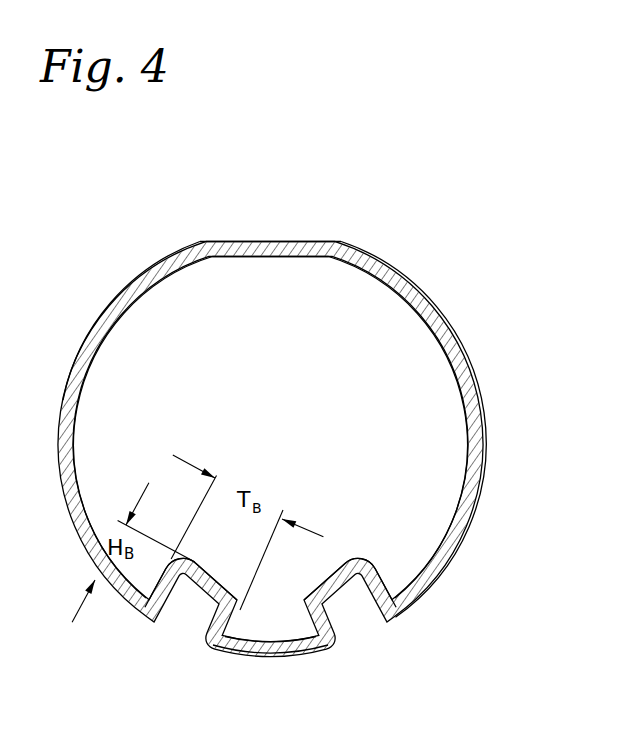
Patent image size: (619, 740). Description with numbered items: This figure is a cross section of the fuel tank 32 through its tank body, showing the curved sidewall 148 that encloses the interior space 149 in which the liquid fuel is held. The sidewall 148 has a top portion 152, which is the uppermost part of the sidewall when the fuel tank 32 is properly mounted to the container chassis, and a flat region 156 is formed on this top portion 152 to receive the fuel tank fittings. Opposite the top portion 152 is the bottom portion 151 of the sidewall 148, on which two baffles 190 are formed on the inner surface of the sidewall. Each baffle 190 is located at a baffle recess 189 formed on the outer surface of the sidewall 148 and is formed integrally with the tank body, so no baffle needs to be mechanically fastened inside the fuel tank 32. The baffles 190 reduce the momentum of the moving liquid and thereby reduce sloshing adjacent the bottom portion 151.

The fuel tank 32 is at (488, 614).
The curved sidewall 148 is at (432, 307).
The interior space 149 is at (347, 310).
The bottom portion 151 is at (276, 658).
The top portion 152 is at (196, 246).
The flat region 156 is at (302, 241).
The baffle recess 189 is at (208, 588).
The baffle 190 is at (352, 558).